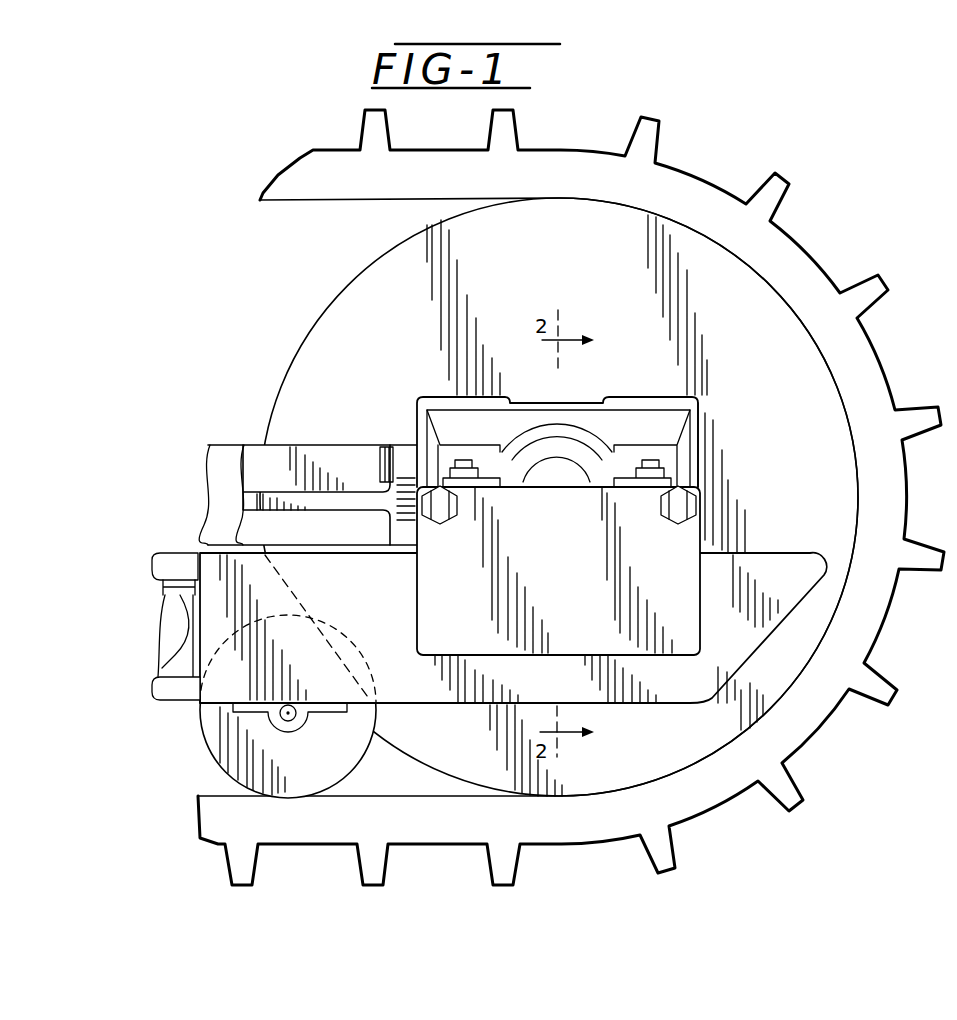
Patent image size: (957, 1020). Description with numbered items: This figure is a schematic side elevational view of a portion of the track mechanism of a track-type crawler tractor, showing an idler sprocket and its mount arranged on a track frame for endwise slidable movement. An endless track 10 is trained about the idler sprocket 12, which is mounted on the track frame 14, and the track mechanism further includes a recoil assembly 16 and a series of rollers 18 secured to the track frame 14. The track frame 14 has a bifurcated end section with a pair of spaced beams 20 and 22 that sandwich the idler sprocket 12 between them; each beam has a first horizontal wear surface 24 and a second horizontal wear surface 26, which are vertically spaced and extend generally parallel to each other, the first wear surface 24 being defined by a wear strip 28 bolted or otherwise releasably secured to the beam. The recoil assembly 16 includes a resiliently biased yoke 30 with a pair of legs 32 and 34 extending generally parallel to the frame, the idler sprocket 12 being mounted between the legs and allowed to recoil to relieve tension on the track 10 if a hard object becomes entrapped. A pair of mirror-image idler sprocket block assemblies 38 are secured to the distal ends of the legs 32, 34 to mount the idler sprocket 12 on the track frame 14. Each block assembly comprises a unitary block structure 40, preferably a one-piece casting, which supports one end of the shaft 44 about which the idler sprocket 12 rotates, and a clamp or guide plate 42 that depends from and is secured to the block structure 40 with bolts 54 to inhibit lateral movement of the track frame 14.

The endless track 10 is at (314, 146).
The idler sprocket 12 is at (338, 288).
The track frame 14 is at (513, 621).
The recoil assembly 16 is at (307, 448).
The rollers 18 is at (305, 775).
The beam 20 is at (670, 683).
The beam 22 is at (162, 593).
The first horizontal wear surface 24 is at (178, 633).
The second horizontal wear surface 26 is at (168, 556).
The wear strip 28 is at (172, 586).
The resiliently biased yoke 30 is at (296, 468).
The leg 32 is at (376, 450).
The leg 34 is at (228, 458).
The idler sprocket block assemblies 38 is at (708, 428).
The unitary block structure 40 is at (586, 417).
The clamp plate 42 is at (568, 588).
The shaft 44 is at (553, 465).
The bolts 54 is at (437, 507).